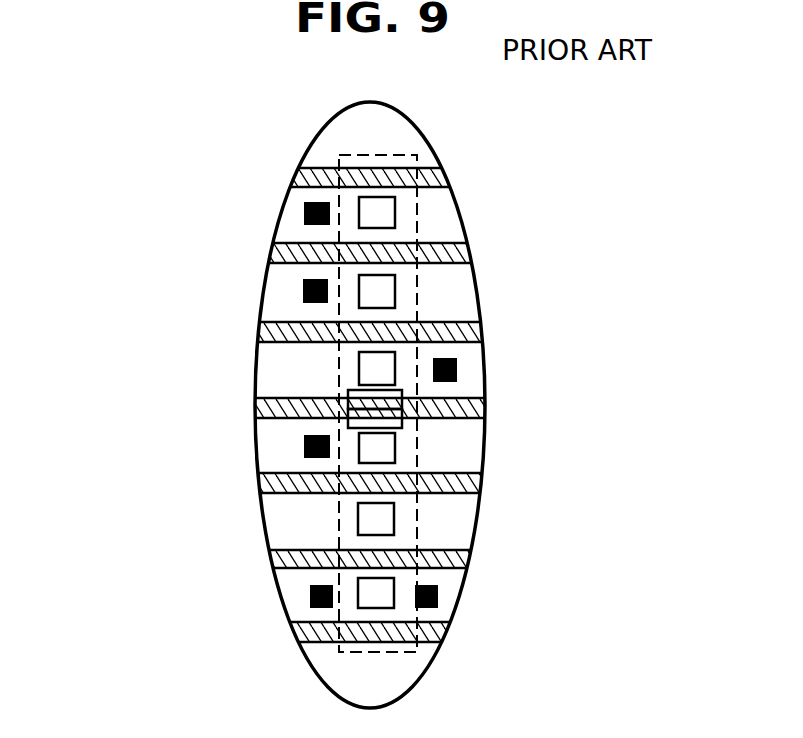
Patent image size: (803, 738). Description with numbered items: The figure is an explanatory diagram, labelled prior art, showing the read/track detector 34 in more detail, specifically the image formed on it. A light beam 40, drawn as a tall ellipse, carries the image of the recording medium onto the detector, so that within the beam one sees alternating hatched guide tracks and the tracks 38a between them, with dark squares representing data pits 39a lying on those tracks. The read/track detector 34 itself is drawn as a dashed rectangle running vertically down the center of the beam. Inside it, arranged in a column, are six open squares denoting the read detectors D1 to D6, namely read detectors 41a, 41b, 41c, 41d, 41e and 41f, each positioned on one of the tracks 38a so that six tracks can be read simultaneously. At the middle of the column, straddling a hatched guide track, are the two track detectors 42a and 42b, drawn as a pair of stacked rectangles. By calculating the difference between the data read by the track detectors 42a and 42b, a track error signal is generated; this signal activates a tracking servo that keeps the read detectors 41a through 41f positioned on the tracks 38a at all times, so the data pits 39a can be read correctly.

The read/track detector 34 is at (375, 153).
The tracks 38a is at (290, 217).
The data pits 39a is at (300, 290).
The light beam 40 is at (314, 146).
The read detector D1 41a is at (395, 212).
The read detector D2 41b is at (395, 290).
The read detector D3 41c is at (395, 370).
The read detector D4 41d is at (395, 447).
The read detector D5 41e is at (357, 520).
The read detector D6 41f is at (357, 603).
The track detector 42a is at (350, 392).
The track detector 42b is at (350, 422).